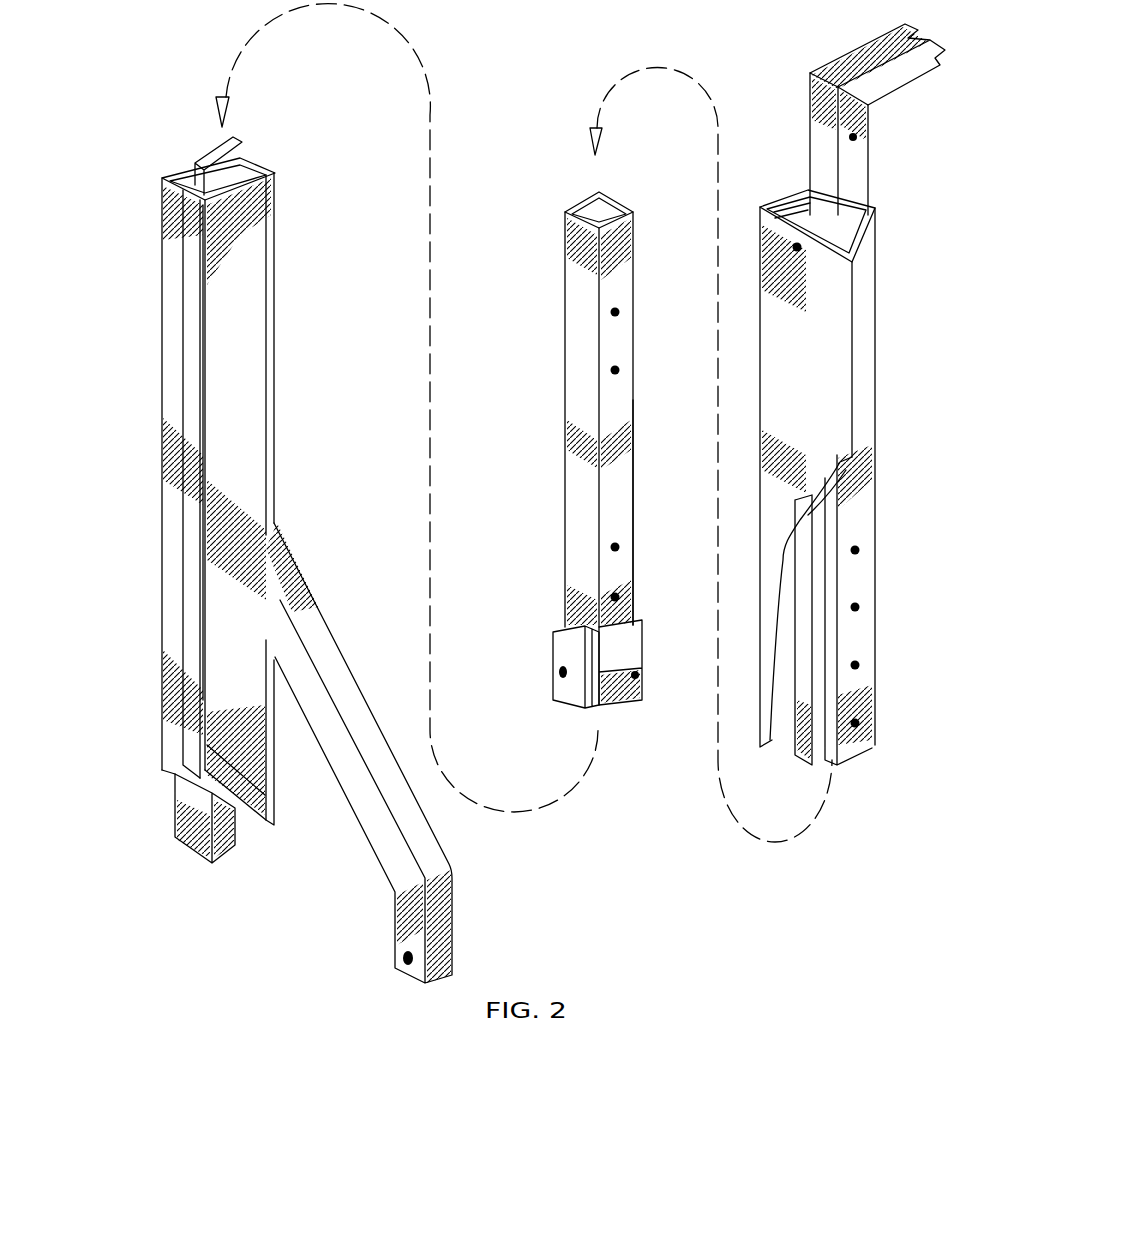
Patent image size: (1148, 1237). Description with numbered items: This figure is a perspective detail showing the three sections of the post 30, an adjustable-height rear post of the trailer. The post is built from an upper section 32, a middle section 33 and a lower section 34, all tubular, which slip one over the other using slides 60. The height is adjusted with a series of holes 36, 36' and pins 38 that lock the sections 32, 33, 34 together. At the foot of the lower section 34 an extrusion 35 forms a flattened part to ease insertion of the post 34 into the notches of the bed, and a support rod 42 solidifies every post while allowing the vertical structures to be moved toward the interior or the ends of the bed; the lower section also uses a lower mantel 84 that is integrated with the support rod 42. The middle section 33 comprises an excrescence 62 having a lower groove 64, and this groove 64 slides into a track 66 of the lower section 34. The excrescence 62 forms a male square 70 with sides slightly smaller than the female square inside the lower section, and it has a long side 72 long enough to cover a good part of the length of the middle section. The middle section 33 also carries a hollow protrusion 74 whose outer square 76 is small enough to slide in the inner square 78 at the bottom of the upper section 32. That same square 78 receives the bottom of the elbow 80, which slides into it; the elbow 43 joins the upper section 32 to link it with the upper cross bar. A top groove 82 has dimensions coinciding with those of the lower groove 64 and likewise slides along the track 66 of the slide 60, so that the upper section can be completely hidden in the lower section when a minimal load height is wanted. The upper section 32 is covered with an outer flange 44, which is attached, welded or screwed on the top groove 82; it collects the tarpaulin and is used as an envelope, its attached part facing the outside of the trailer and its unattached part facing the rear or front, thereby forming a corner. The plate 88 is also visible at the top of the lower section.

The post 30 is at (602, 843).
The upper section 32 is at (866, 357).
The middle section 33 is at (580, 352).
The lower section 34 is at (232, 383).
The extrusion 35 is at (237, 845).
The holes 36 is at (645, 336).
The holes 36' is at (870, 605).
The pins 38 is at (625, 545).
The support rod 42 is at (308, 680).
The elbow 43 is at (853, 118).
The outer flange 44 is at (832, 310).
The slides 60 is at (170, 543).
The excrescence 62 is at (558, 632).
The lower groove 64 is at (553, 652).
The track 66 is at (195, 327).
The male square 70 is at (636, 636).
The long side 72 is at (641, 672).
The hollow protrusion 74 is at (636, 478).
The outer square 76 is at (617, 202).
The inner square 78 is at (858, 203).
The bottom of the elbow 80 is at (862, 143).
The top groove 82 is at (803, 212).
The lower mantel 84 is at (257, 748).
The plate 88 is at (197, 163).